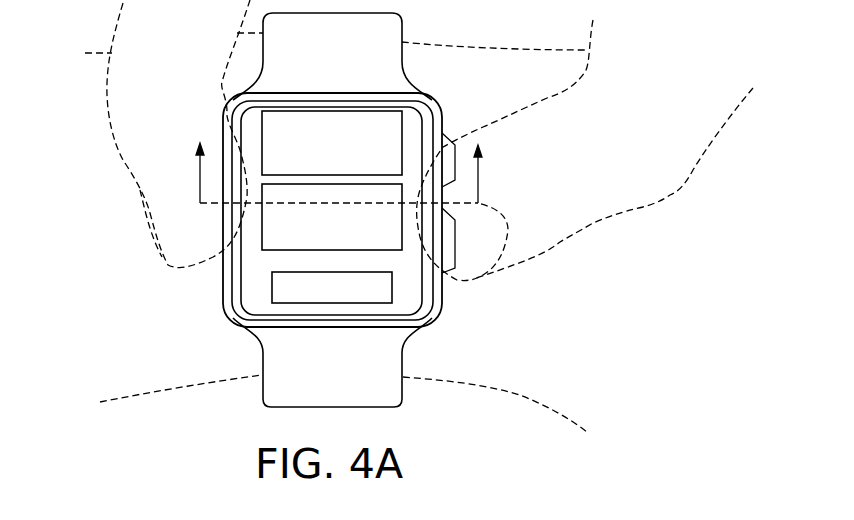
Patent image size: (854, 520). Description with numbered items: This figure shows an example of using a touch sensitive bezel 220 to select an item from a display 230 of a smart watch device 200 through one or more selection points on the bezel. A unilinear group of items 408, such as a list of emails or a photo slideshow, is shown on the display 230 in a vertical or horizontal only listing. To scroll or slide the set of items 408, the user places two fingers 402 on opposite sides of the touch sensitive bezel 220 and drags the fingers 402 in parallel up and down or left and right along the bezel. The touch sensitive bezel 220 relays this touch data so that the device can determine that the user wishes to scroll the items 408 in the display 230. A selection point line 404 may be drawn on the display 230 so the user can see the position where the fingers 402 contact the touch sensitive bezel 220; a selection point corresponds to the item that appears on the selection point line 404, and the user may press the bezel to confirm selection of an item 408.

The smart watch device 200 is at (369, 210).
The touch sensitive bezel 220 is at (432, 103).
The display 230 is at (330, 210).
The fingers 402 is at (123, 162).
The selection point line 404 is at (272, 200).
The unilinear group of items 408 is at (333, 111).